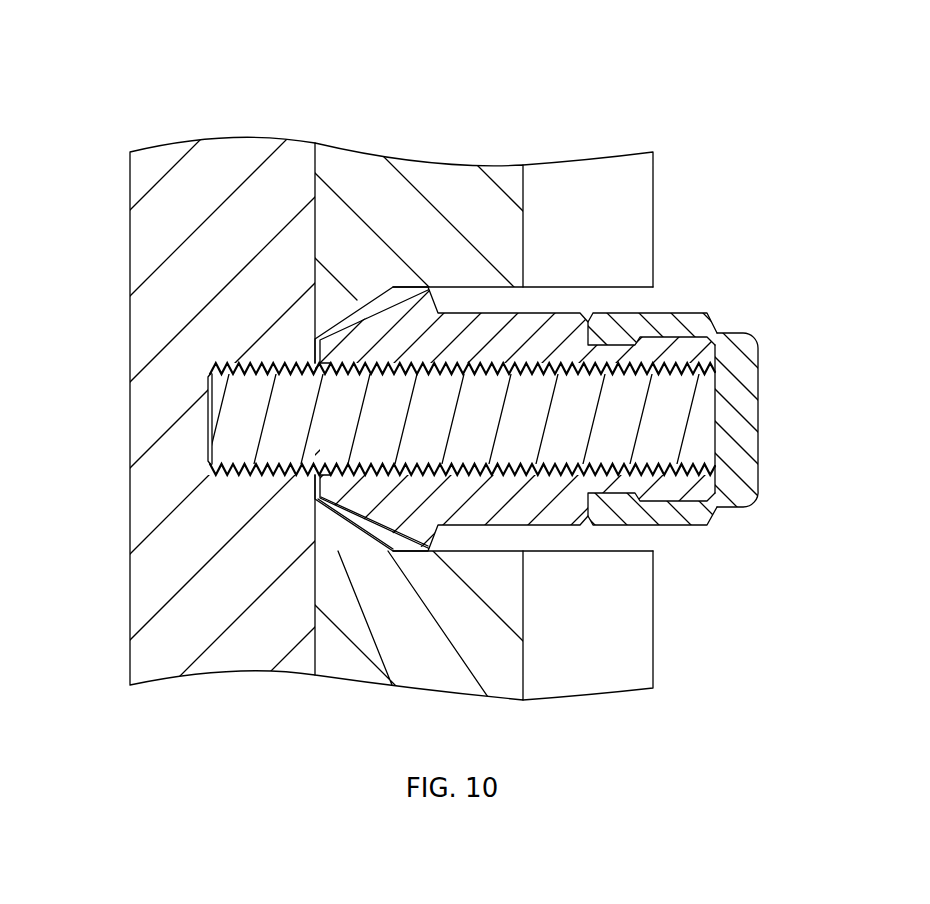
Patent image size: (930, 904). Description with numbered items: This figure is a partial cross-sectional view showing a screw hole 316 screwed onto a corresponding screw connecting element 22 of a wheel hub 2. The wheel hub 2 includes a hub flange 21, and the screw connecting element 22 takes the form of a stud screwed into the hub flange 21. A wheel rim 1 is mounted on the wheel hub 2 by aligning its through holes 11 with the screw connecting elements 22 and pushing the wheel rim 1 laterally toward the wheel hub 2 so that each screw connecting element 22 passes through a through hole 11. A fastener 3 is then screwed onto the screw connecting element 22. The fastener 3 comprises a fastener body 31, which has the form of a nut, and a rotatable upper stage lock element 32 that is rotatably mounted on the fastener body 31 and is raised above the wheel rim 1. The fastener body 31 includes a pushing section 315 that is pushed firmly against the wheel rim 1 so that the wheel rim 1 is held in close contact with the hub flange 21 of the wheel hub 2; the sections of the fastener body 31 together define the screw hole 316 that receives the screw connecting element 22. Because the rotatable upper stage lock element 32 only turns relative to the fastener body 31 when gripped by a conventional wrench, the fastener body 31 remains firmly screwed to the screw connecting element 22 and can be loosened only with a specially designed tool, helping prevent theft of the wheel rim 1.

The wheel rim 1 is at (352, 178).
The through hole 11 is at (452, 297).
The wheel hub 2 is at (203, 112).
The hub flange 21 is at (190, 263).
The screw connecting element 22 is at (470, 432).
The fastener 3 is at (552, 297).
The fastener body 31 is at (560, 528).
The rotatable upper stage lock element 32 is at (769, 334).
The pushing section 315 is at (385, 513).
The screw hole 316 is at (543, 472).